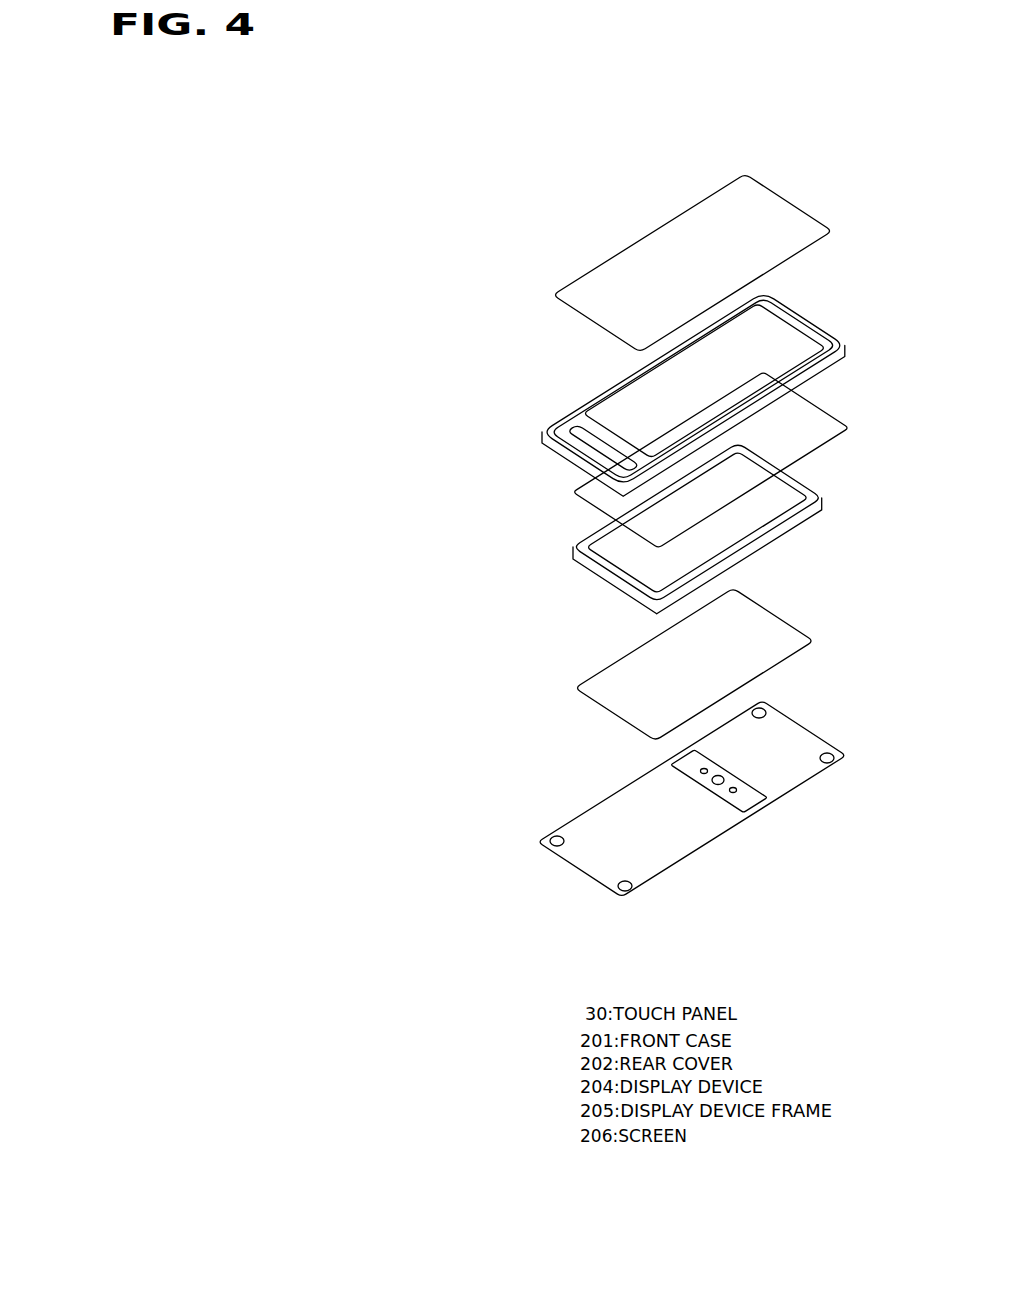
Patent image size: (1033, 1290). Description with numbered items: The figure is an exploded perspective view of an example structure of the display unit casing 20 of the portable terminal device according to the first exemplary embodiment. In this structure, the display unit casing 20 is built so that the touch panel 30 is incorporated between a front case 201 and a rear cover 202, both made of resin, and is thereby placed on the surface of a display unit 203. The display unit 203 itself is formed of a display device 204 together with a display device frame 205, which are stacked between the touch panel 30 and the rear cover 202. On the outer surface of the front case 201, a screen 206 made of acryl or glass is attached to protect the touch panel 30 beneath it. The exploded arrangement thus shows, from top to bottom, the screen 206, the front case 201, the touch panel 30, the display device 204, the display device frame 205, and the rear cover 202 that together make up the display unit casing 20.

The display unit casing 20 is at (250, 955).
The display unit 203 is at (420, 532).
The touch panel 30 is at (587, 507).
The front case 201 is at (560, 435).
The rear cover 202 is at (578, 852).
The display device 204 is at (590, 553).
The display device frame 205 is at (600, 693).
The screen 206 is at (605, 288).